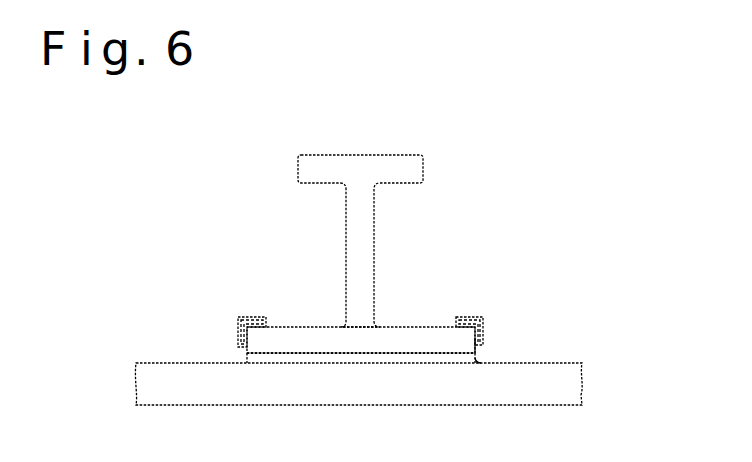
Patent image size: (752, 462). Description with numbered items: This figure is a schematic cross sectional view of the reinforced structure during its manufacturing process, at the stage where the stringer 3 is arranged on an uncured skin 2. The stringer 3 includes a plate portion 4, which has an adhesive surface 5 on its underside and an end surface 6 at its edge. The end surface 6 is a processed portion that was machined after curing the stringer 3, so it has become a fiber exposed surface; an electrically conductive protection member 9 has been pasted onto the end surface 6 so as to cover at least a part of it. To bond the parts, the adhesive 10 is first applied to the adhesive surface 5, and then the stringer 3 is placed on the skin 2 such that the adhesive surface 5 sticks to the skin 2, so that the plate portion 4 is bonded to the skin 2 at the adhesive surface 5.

The skin 2 is at (570, 386).
The stringer 3 is at (370, 223).
The plate portion 4 is at (300, 333).
The adhesive surface 5 is at (402, 352).
The end surface 6 is at (475, 338).
The electrically conductive protection member 9 is at (467, 317).
The adhesive 10 is at (479, 361).